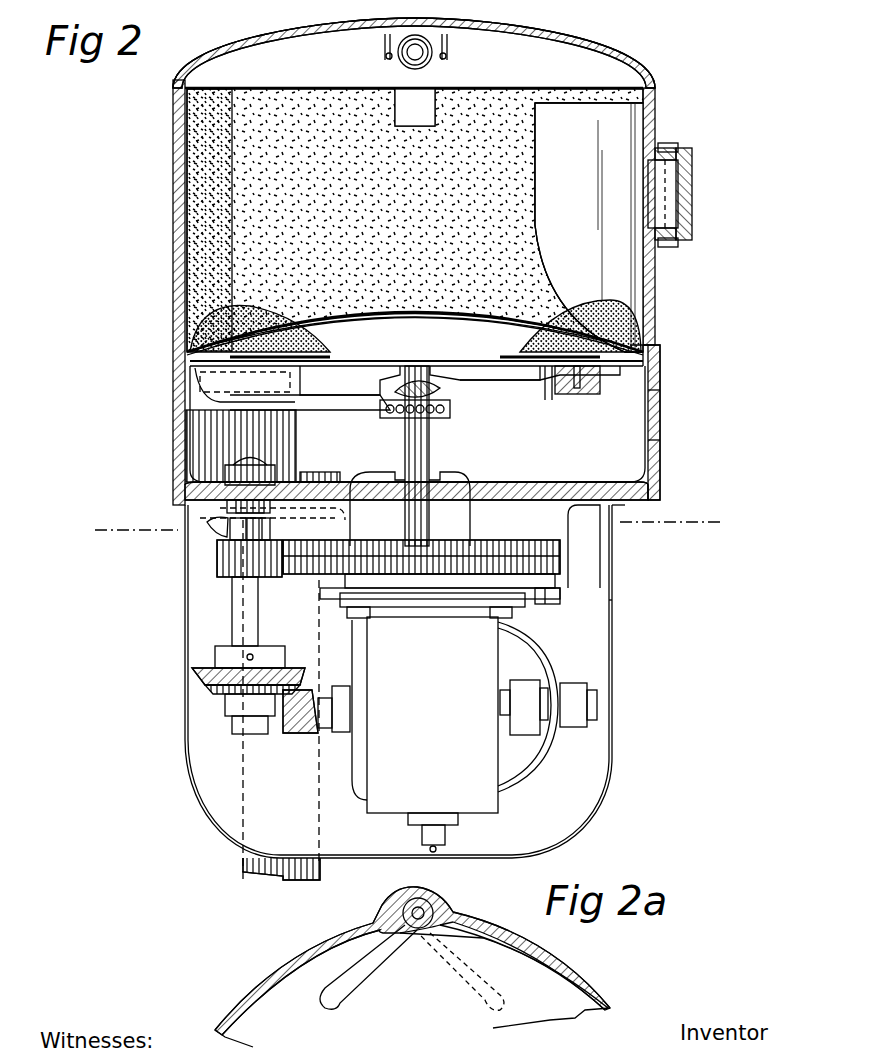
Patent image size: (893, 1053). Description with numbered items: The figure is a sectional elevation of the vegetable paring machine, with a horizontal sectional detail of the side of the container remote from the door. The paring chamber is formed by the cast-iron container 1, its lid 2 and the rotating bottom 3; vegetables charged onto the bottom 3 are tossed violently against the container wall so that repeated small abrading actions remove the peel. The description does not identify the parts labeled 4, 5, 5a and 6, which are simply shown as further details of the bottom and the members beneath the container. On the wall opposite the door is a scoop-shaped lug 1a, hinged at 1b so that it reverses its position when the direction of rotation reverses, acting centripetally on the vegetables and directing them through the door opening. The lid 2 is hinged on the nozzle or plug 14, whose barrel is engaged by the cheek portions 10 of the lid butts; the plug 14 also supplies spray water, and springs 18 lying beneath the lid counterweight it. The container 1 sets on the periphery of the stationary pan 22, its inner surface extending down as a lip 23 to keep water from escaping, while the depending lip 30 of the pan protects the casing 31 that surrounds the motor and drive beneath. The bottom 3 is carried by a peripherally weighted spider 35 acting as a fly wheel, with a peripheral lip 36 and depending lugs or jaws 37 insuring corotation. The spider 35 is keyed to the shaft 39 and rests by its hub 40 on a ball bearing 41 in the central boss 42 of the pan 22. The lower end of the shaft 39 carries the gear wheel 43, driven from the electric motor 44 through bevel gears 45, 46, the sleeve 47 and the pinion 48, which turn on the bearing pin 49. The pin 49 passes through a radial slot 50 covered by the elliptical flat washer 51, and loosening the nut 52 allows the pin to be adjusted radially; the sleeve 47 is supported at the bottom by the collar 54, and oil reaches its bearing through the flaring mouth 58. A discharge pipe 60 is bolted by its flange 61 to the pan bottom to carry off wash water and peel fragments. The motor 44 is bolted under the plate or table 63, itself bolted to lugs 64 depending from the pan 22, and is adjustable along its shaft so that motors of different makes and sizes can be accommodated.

In FIG. 2, the container 1 is at (172, 240).
In FIG. 2A, the container 1 is at (580, 978).
In FIG. 2, the scoop-shaped lug 1a is at (625, 200).
In FIG. 2A, the scoop-shaped lug 1a is at (348, 983).
In FIG. 2, the hinge of the lug 1b is at (674, 152).
In FIG. 2A, the hinge of the lug 1b is at (430, 913).
In FIG. 2, the lid 2 is at (604, 78).
In FIG. 2, the rotating bottom 3 is at (362, 364).
In FIG. 2, the feeder arm 4 is at (222, 382).
In FIG. 2, the dome 5 is at (415, 333).
In FIG. 2, the dome flange 5a is at (445, 320).
In FIG. 2, the pin 6 is at (548, 400).
In FIG. 2, the cheek portions 10 is at (407, 529).
In FIG. 2, the nozzle or plug 14 is at (418, 56).
In FIG. 2, the springs 18 is at (383, 56).
In FIG. 2, the stationary pan 22 is at (662, 455).
In FIG. 2, the lip 23 is at (662, 394).
In FIG. 2, the depending lip 30 is at (642, 530).
In FIG. 2, the casing 31 is at (620, 588).
In FIG. 2, the spider 35 is at (510, 380).
In FIG. 2, the peripheral lip 36 is at (660, 362).
In FIG. 2, the depending lugs or jaws 37 is at (578, 390).
In FIG. 2, the shaft 39 is at (470, 478).
In FIG. 2, the hub 40 is at (398, 396).
In FIG. 2, the ball bearing 41 is at (408, 420).
In FIG. 2, the central hub or boss 42 is at (432, 430).
In FIG. 2, the gear wheel 43 is at (495, 518).
In FIG. 2, the electric motor 44 is at (468, 722).
In FIG. 2, the bevel gear 45 is at (300, 730).
In FIG. 2, the bevel gear 46 is at (300, 690).
In FIG. 2, the sleeve 47 is at (262, 700).
In FIG. 2, the pinion 48 is at (268, 545).
In FIG. 2, the bearing pin 49 is at (240, 535).
In FIG. 2, the radial slot 50 is at (225, 490).
In FIG. 2, the elliptical flat washer 51 is at (340, 478).
In FIG. 2, the nut 52 is at (300, 472).
In FIG. 2, the collar 54 is at (235, 716).
In FIG. 2, the flaring mouth 58 is at (207, 525).
In FIG. 2, the discharge pipe 60 is at (243, 868).
In FIG. 2, the flange 61 is at (350, 527).
In FIG. 2, the plate or table 63 is at (568, 595).
In FIG. 2, the lugs 64 is at (584, 546).